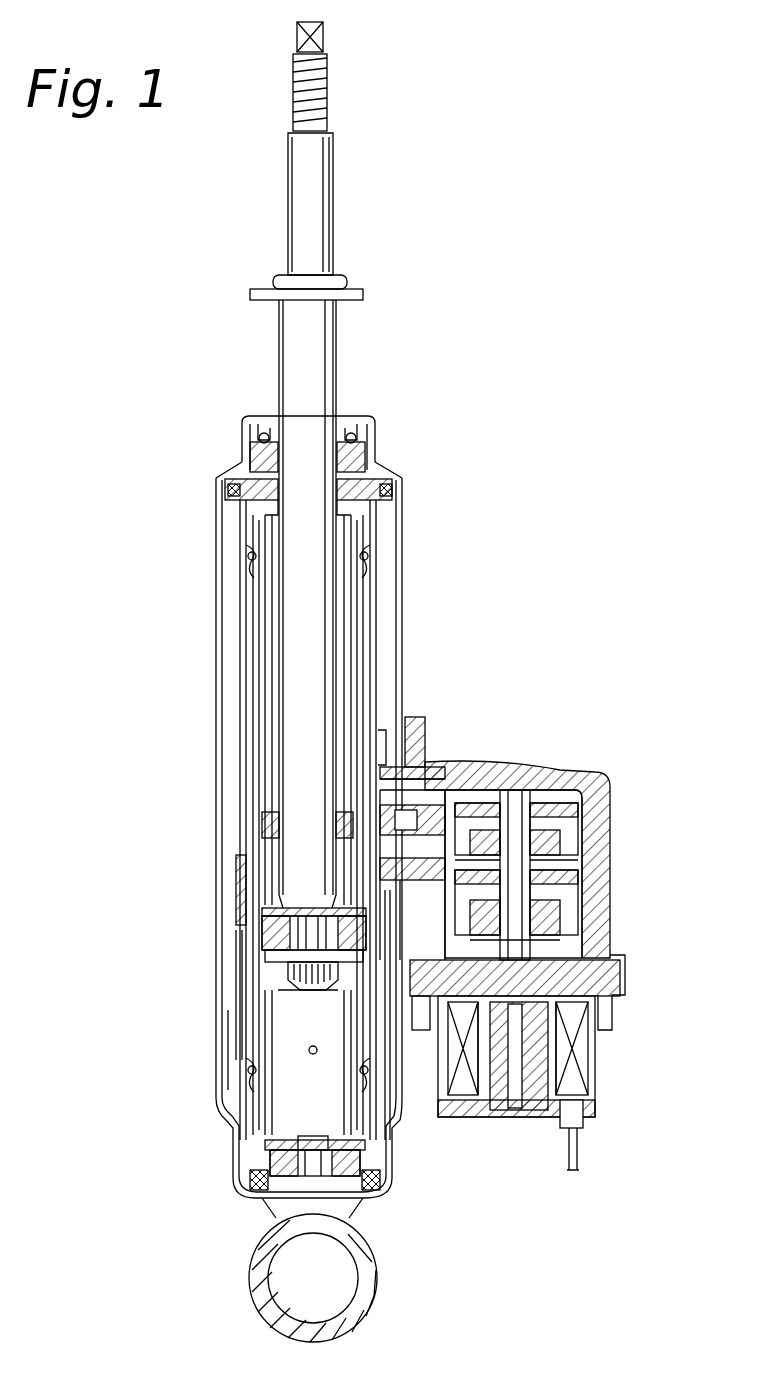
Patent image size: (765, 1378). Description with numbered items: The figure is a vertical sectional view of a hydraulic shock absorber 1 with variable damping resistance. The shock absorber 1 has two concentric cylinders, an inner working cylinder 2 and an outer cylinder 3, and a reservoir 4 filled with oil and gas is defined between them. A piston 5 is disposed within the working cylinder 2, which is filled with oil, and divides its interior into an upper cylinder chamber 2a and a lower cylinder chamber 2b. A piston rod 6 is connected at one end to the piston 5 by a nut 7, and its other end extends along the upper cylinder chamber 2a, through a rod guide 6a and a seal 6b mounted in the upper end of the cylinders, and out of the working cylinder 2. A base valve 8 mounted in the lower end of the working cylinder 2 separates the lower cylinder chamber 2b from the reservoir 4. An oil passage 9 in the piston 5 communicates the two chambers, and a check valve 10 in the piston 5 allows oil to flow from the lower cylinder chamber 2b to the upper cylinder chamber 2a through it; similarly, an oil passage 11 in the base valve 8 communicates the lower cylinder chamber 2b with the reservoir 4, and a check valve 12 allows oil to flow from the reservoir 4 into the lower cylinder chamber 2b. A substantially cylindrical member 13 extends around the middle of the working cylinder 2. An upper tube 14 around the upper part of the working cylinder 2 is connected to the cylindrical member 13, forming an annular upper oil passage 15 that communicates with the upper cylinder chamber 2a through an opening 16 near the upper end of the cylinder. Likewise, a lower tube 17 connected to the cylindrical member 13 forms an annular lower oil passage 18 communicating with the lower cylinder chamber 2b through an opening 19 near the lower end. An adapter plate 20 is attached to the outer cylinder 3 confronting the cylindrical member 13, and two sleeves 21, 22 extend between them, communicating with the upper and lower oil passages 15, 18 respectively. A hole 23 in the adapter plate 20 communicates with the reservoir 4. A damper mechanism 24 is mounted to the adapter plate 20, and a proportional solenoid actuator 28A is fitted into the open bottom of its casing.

The hydraulic shock absorber 1 is at (489, 316).
The working cylinder 2 is at (376, 612).
The upper cylinder chamber 2a is at (265, 628).
The lower cylinder chamber 2b is at (280, 1110).
The outer cylinder 3 is at (404, 536).
The reservoir 4 is at (385, 582).
The piston 5 is at (240, 928).
The piston rod 6 is at (315, 388).
The rod guide 6a is at (404, 482).
The seal 6b is at (372, 428).
The nut 7 is at (276, 985).
The base valve 8 is at (258, 1170).
The oil passage 9 is at (264, 944).
The check valve 10 is at (262, 918).
The oil passage 11 is at (363, 1200).
The check valve 12 is at (393, 1122).
The cylindrical member 13 is at (262, 822).
The upper tube 14 is at (240, 665).
The upper oil passage 15 is at (365, 656).
The opening 16 is at (252, 588).
The lower tube 17 is at (236, 1028).
The lower oil passage 18 is at (240, 968).
The opening 19 is at (250, 1064).
The adapter plate 20 is at (420, 716).
The sleeve 21 is at (430, 762).
The sleeve 22 is at (445, 776).
The hole 23 is at (430, 1082).
The damper mechanism 24 is at (614, 812).
The proportional solenoid actuator 28A is at (600, 1085).